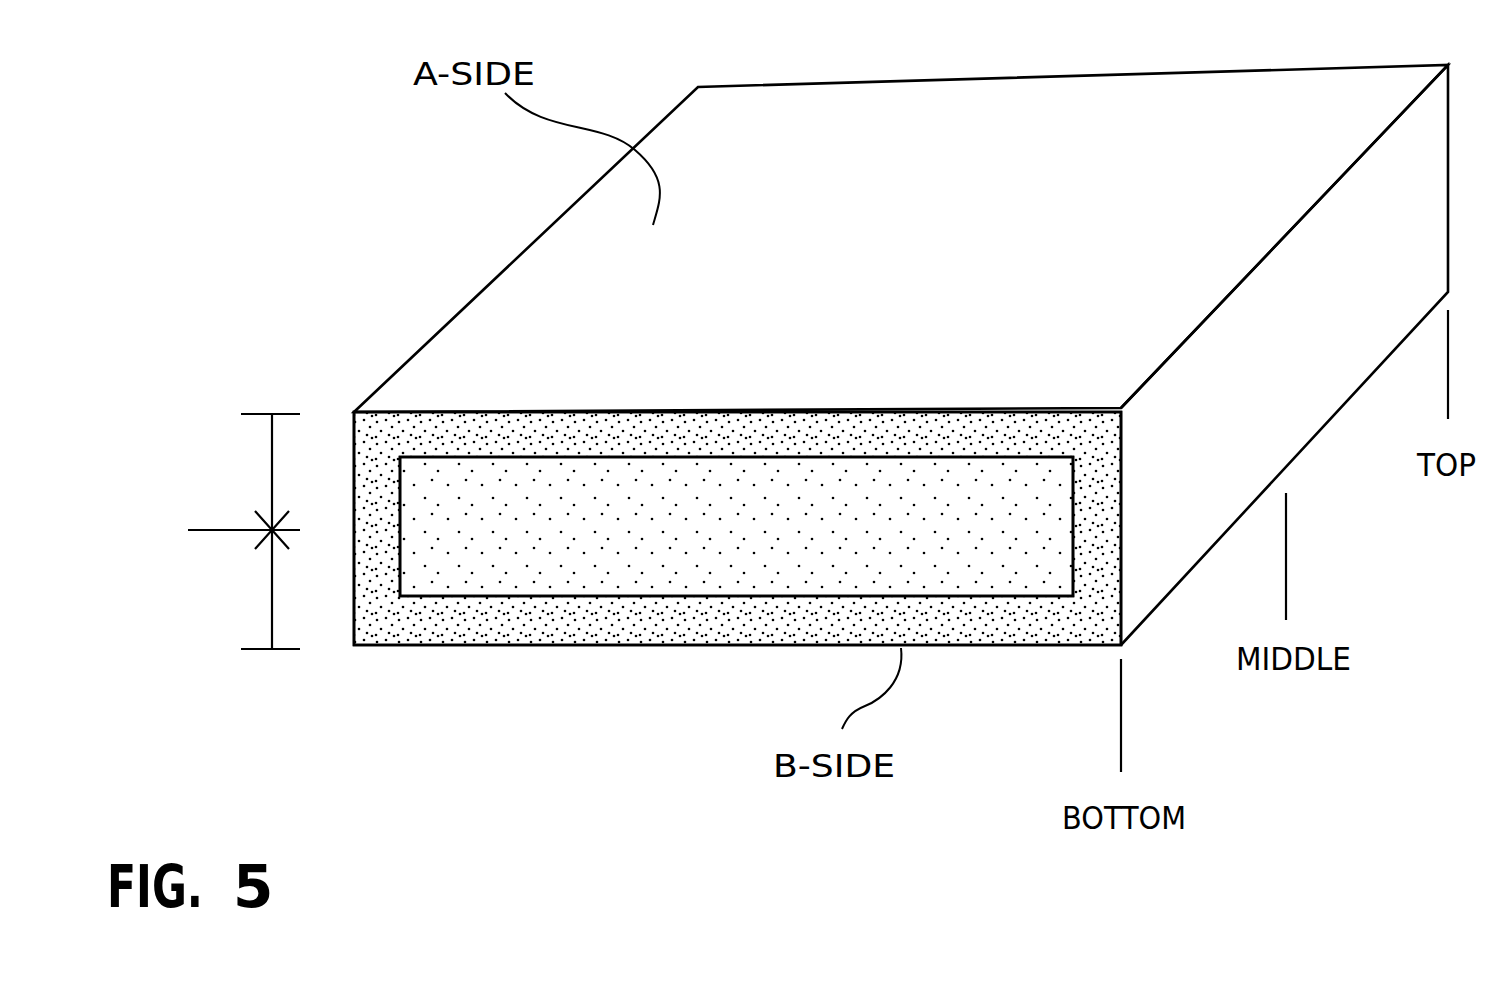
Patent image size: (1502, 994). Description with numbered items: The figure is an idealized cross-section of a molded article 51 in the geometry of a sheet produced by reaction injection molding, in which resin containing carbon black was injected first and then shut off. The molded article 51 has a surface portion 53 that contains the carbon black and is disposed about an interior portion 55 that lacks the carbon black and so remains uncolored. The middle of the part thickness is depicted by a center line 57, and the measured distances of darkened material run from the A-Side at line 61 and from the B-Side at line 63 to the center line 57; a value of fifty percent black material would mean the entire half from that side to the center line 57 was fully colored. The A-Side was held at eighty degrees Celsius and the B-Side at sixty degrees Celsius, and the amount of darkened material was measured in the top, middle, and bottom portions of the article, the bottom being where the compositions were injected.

The molded article 51 is at (897, 280).
The surface portion 53 is at (679, 437).
The interior portion 55 is at (681, 548).
The center line 57 is at (200, 530).
The A-Side line 61 is at (272, 412).
The B-Side line 63 is at (272, 651).